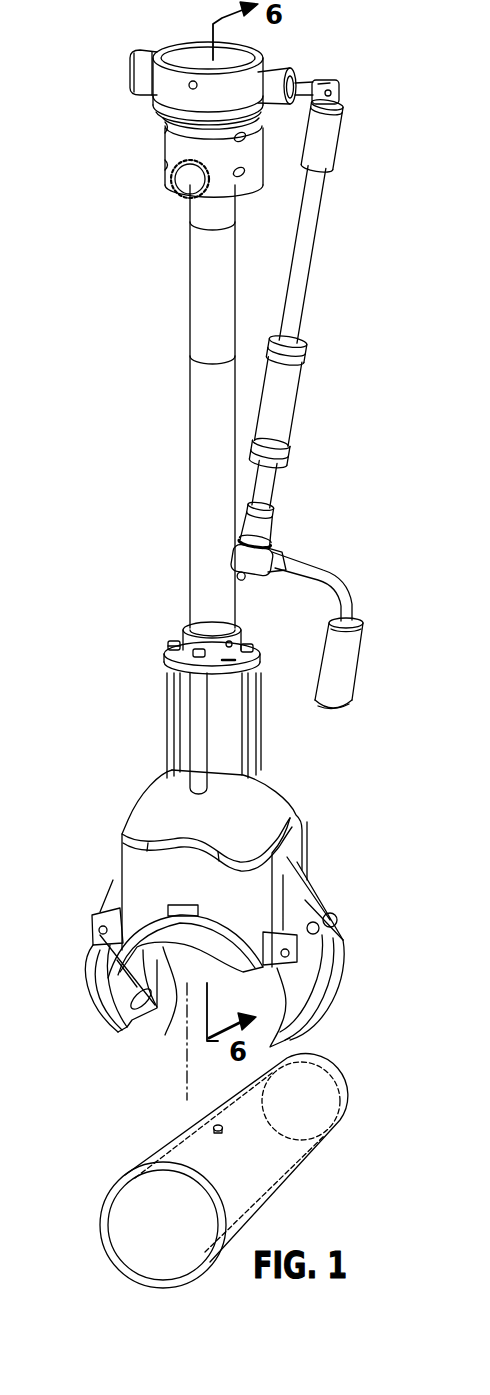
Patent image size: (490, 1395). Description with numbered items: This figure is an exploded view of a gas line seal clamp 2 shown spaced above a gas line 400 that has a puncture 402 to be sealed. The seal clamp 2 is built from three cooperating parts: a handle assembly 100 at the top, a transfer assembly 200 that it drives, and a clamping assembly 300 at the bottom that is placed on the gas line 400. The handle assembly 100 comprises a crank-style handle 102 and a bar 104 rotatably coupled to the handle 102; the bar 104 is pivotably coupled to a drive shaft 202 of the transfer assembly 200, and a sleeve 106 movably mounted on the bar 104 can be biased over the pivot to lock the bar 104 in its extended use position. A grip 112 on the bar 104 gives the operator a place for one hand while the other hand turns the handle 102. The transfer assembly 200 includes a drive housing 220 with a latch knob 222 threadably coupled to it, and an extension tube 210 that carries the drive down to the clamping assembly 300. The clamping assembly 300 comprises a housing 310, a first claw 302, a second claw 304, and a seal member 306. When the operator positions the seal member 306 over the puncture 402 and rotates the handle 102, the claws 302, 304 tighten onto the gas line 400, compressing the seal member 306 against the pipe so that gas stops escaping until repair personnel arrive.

The gas line seal clamp 2 is at (121, 57).
The handle assembly 100 is at (344, 221).
The handle 102 is at (362, 654).
The bar 104 is at (297, 284).
The sleeve 106 is at (330, 138).
The grip 112 is at (278, 404).
The transfer assembly 200 is at (133, 160).
The drive shaft 202 is at (304, 88).
The extension tube 210 is at (203, 296).
The drive housing 220 is at (247, 160).
The latch knob 222 is at (183, 186).
The clamping assembly 300 is at (140, 783).
The first claw 302 is at (86, 953).
The second claw 304 is at (296, 1002).
The seal member 306 is at (163, 1041).
The housing 310 is at (255, 800).
The gas line 400 is at (308, 1101).
The puncture 402 is at (213, 1125).